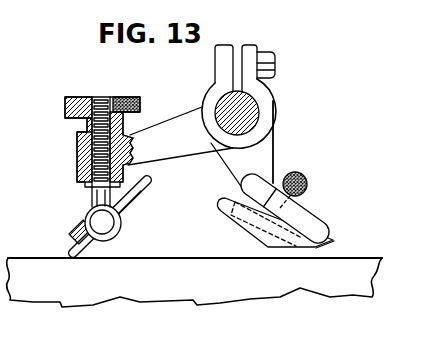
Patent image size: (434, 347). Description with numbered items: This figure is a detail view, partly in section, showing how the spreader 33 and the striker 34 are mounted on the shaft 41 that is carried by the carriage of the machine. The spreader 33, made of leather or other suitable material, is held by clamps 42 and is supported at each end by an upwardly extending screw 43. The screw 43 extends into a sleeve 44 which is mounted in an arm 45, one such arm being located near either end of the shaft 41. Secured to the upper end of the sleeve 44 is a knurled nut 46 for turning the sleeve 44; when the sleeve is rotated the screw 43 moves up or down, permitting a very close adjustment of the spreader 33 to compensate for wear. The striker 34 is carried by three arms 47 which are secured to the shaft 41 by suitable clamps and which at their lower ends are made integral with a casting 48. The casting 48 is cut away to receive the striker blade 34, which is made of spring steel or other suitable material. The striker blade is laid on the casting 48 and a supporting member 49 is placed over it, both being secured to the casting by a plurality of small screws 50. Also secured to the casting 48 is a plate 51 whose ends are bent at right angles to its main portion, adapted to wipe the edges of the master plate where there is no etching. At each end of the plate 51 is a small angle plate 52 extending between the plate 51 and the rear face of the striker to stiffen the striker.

The spreader 33 is at (72, 249).
The striker 34 is at (333, 238).
The shaft 41 is at (251, 105).
The clamps 42 is at (87, 217).
The screw 43 is at (92, 196).
The sleeve 44 is at (117, 98).
The arm 45 is at (158, 128).
The knurled nut 46 is at (80, 97).
The arms 47 is at (263, 143).
The casting 48 is at (275, 170).
The supporting member 49 is at (280, 178).
The small screws 50 is at (307, 183).
The plate 51 is at (236, 200).
The angle plate 52 is at (333, 249).